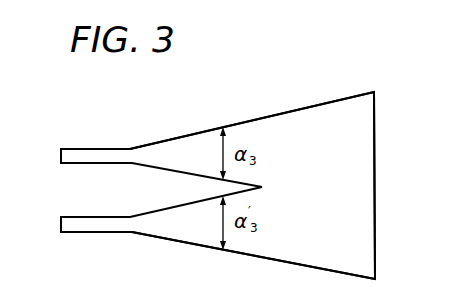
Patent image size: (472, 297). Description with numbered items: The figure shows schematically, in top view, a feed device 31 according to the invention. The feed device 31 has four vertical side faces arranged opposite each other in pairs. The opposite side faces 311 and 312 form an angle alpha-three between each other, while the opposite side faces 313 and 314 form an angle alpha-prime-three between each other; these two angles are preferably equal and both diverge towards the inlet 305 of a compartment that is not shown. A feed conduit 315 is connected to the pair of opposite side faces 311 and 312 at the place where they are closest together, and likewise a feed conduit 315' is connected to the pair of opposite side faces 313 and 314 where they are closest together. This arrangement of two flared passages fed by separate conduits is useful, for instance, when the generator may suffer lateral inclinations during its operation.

The feed device 31 is at (289, 104).
The inlet 305 is at (445, 147).
The side face 311 is at (165, 140).
The side face 312 is at (253, 184).
The side face 313 is at (154, 212).
The side face 314 is at (160, 239).
The feed conduit 315 is at (80, 132).
The feed conduit 315' is at (76, 252).